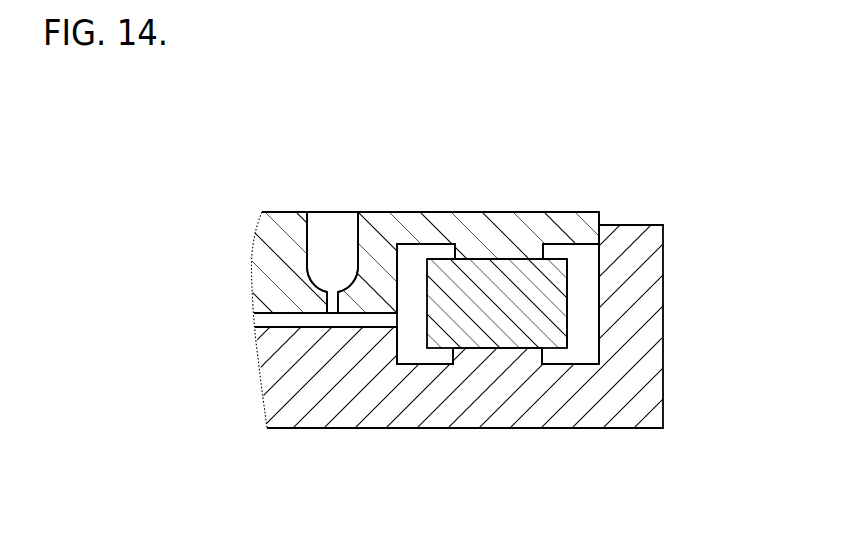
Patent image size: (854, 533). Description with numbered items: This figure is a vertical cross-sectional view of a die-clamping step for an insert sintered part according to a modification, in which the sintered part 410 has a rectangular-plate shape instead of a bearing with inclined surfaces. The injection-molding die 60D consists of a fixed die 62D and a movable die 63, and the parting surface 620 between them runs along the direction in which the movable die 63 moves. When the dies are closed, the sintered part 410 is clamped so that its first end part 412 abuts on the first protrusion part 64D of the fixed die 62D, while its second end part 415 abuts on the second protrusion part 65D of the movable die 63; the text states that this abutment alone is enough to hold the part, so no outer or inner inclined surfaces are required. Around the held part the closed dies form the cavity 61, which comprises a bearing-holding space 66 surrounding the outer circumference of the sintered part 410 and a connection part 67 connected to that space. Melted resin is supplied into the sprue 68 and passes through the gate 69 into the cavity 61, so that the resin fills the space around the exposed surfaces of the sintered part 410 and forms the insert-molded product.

The injection-molding die 60D is at (443, 294).
The fixed die 62D is at (458, 213).
The sprue 68 is at (346, 232).
The gate 69 is at (325, 299).
The connection part 67 is at (274, 318).
The cavity 61 is at (418, 265).
The first protrusion part 64D is at (447, 254).
The sintered part 410 is at (575, 288).
The first end part 412 is at (536, 256).
The movable die 63 is at (643, 395).
The second protrusion part 65D is at (453, 353).
The second end part 415 is at (540, 360).
The bearing-holding space 66 is at (592, 326).
The parting surface 620 is at (602, 226).